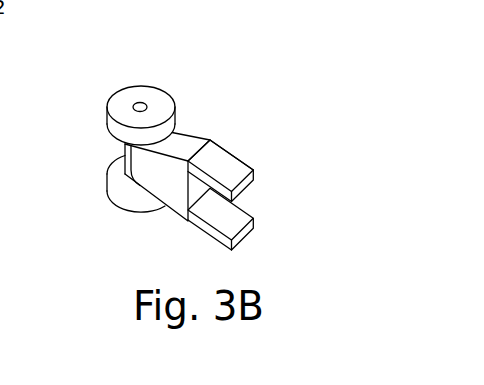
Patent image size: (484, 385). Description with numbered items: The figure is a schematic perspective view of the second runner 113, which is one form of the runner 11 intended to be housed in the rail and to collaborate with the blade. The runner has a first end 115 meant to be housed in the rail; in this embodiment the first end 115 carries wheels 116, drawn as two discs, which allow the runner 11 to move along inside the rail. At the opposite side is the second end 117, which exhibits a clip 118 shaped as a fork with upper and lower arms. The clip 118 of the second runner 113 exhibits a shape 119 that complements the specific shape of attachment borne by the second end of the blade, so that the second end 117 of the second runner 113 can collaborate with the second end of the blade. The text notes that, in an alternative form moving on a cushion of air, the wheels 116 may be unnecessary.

The runner 11 is at (100, 108).
The second runner 113 is at (240, 60).
The first end 115 is at (118, 153).
The wheels 116 is at (142, 97).
The second end 117 is at (258, 179).
The clip 118 is at (248, 242).
The shape 119 is at (238, 160).